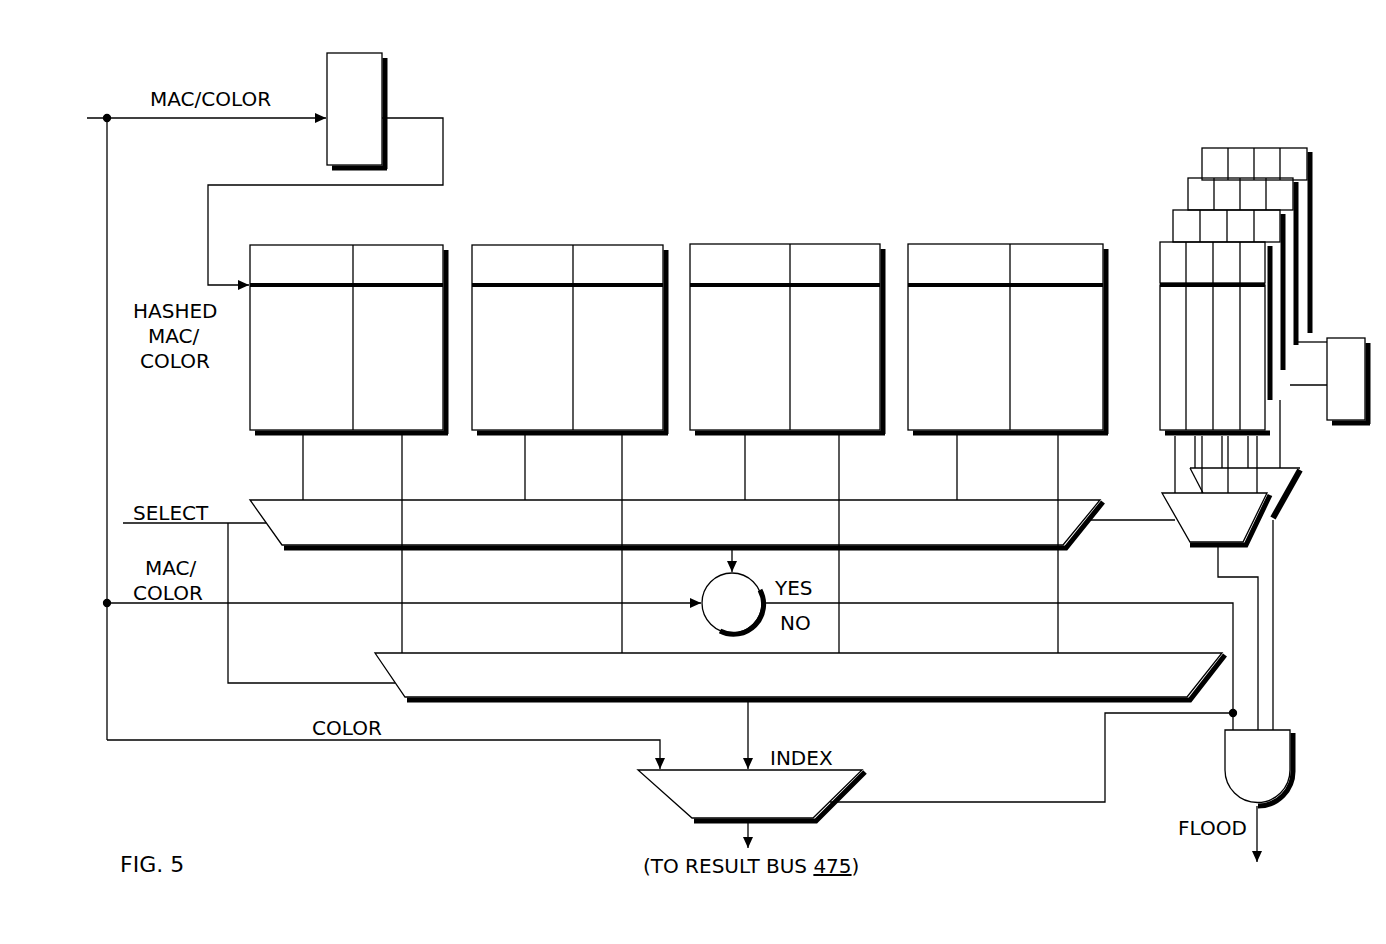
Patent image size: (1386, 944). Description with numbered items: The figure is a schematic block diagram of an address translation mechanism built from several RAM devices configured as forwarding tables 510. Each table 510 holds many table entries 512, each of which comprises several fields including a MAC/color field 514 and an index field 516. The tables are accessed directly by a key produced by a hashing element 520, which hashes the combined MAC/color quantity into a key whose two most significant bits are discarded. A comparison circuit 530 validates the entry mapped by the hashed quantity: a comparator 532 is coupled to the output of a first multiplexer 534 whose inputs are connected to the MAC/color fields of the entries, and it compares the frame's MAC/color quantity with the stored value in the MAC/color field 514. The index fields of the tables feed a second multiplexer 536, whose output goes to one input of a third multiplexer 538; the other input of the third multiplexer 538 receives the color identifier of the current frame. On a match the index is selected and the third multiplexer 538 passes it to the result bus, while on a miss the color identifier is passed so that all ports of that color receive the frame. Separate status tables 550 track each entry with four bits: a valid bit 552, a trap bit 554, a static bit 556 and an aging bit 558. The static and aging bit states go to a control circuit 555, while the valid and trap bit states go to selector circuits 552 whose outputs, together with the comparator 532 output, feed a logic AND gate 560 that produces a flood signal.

The forwarding tables 510 is at (432, 245).
The table entries 512 is at (262, 282).
The MAC/color field 514 is at (318, 287).
The index field 516 is at (374, 289).
The hashing element 520 is at (388, 72).
The comparison circuit 530 is at (251, 641).
The comparator 532 is at (720, 576).
The first multiplexer 534 is at (462, 500).
The second multiplexer 536 is at (385, 653).
The third multiplexer 538 is at (661, 795).
The status tables 550 is at (1160, 386).
The valid bit / selector circuits 552 is at (1163, 240).
The trap bit 554 is at (1175, 210).
The static bit 556 is at (1190, 178).
The aging bit 558 is at (1203, 148).
The control circuit 555 is at (1327, 413).
The logic AND gate 560 is at (1225, 760).